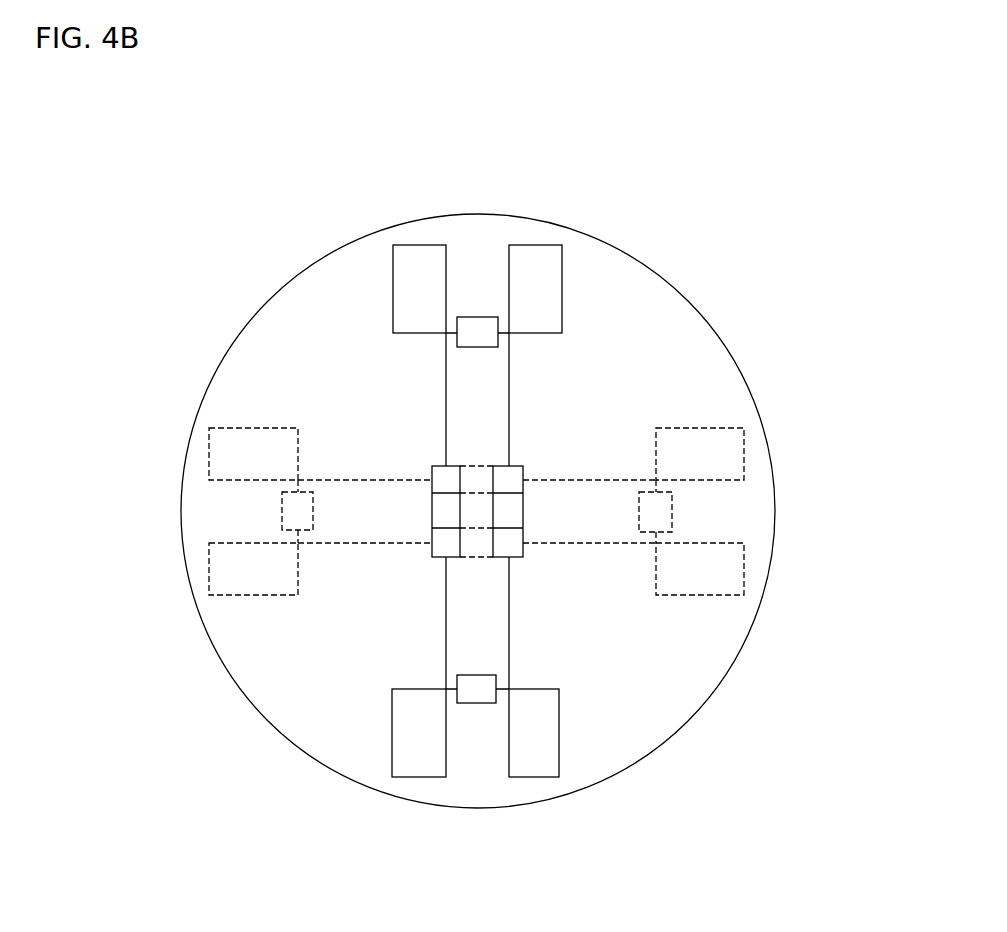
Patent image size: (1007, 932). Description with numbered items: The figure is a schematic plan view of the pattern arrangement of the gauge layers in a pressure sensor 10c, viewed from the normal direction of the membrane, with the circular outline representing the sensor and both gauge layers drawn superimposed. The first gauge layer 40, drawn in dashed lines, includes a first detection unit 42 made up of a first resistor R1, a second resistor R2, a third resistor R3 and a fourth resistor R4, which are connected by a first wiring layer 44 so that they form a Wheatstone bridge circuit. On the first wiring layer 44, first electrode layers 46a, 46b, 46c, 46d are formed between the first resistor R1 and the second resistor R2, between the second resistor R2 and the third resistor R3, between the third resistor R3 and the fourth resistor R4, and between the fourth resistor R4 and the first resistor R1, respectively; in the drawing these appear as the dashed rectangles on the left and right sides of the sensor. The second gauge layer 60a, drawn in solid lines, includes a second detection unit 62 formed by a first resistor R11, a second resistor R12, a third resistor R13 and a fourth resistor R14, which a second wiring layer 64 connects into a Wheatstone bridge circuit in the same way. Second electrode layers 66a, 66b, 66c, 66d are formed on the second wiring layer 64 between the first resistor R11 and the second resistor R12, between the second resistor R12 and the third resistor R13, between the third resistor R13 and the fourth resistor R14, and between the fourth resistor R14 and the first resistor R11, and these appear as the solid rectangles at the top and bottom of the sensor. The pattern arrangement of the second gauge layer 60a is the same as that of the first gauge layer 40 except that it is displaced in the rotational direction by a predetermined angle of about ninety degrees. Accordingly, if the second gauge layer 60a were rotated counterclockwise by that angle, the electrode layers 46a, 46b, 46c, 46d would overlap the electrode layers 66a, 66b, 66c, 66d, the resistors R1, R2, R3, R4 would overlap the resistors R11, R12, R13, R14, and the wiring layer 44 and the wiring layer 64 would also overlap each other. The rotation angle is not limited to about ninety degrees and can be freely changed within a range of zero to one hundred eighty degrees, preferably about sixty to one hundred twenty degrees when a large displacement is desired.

The pressure sensor 10c is at (637, 230).
The first gauge layer 40 is at (578, 468).
The first detection unit 42 is at (613, 550).
The first wiring layer 44 is at (363, 543).
The second gauge layer 60a is at (527, 403).
The second detection unit 62 is at (528, 570).
The second wiring layer 64 is at (443, 663).
The second electrode layer 66a is at (417, 258).
The second electrode layer 66b is at (418, 762).
The second electrode layer 66c is at (523, 763).
The second electrode layer 66d is at (537, 258).
The first resistor R1 is at (298, 512).
The second resistor R2 is at (447, 618).
The third resistor R3 is at (657, 512).
The fourth resistor R4 is at (473, 477).
The first resistor R11 is at (478, 327).
The second resistor R12 is at (432, 512).
The third resistor R13 is at (475, 692).
The fourth resistor R14 is at (523, 512).
The first electrode layer 46a is at (248, 580).
The first electrode layer 46b is at (725, 570).
The first electrode layer 46c is at (700, 442).
The first electrode layer 46d is at (247, 440).